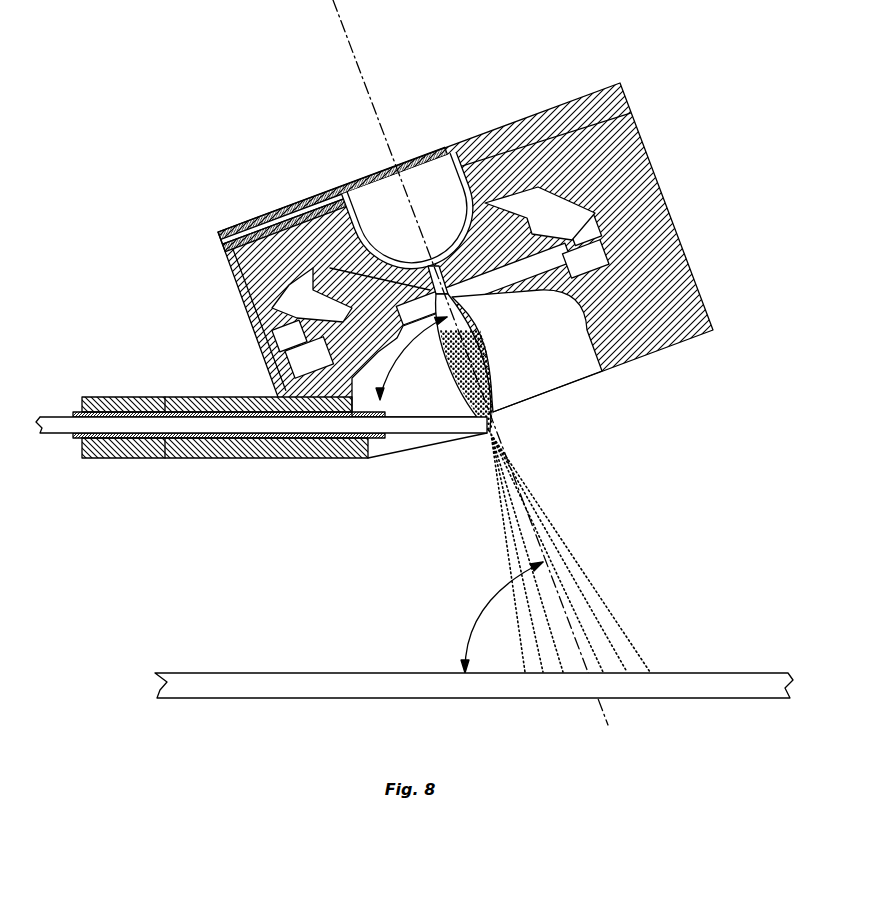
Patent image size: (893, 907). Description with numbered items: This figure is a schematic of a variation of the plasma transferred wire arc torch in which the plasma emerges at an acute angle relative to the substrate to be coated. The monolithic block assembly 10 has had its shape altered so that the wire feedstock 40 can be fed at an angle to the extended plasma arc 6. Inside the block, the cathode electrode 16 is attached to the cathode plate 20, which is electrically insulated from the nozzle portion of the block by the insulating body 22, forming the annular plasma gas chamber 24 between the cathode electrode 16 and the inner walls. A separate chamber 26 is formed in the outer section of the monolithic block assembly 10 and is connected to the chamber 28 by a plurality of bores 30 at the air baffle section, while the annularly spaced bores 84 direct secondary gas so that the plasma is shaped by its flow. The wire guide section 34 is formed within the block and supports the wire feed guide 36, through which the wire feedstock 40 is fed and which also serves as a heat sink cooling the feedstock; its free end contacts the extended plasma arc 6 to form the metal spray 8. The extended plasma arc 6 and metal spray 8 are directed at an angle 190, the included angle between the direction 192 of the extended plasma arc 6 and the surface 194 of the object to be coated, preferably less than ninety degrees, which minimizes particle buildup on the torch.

The extended plasma arc 6 is at (497, 377).
The metal spray 8 is at (600, 628).
The monolithic block assembly 10 is at (705, 305).
The cathode electrode 16 is at (428, 188).
The cathode plate 20 is at (510, 122).
The insulating body 22 is at (647, 135).
The annular plasma gas chamber 24 is at (333, 195).
The chamber 26 is at (600, 252).
The chamber 28 is at (557, 207).
The bores 30 is at (640, 175).
The wire guide section 34 is at (245, 458).
The wire feed guide 36 is at (165, 458).
The wire feedstock 40 is at (402, 427).
The annularly spaced bores 84 is at (458, 148).
The angle 190 is at (502, 617).
The direction of extended plasma arc 192 is at (366, 74).
The surface of the object to be coated 194 is at (705, 675).